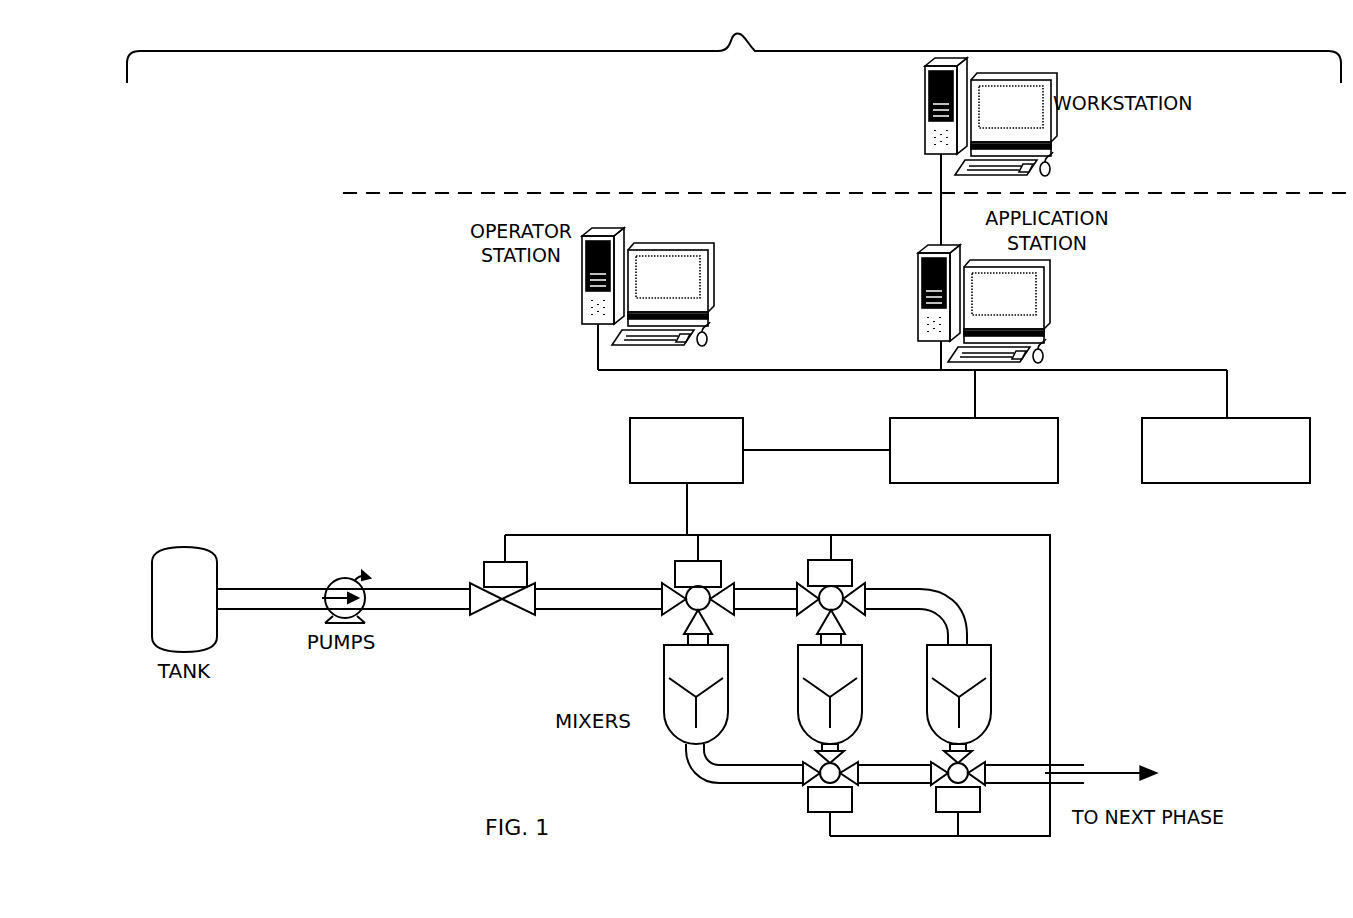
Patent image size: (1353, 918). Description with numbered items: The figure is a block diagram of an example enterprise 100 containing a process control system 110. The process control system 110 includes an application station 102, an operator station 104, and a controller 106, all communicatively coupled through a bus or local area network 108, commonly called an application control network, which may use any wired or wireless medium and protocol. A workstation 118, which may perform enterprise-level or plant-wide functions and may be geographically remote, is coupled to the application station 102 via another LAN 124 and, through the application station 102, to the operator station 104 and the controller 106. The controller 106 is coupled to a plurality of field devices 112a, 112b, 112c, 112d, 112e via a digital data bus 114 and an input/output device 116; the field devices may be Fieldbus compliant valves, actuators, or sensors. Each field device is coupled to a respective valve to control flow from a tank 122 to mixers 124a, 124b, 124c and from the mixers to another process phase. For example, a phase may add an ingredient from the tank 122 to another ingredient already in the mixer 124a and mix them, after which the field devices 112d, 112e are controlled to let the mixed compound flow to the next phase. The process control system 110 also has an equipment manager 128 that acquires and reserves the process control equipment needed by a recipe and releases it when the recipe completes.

The enterprise 100 is at (740, 33).
The application station 102 is at (918, 292).
The operator station 104 is at (620, 232).
The controller 106 is at (1031, 418).
The bus or local area network 108 is at (757, 370).
The process control system 110 is at (394, 354).
The field device 112a is at (484, 575).
The field device 112b is at (675, 574).
The field device 112c is at (852, 574).
The field device 112d is at (815, 812).
The field device 112e is at (940, 812).
The digital data bus 114 is at (668, 511).
The input/output (I/O) device 116 is at (743, 433).
The workstation 118 is at (925, 100).
The tank 122 is at (184, 599).
The LAN 124 is at (940, 172).
The mixer 124a is at (728, 695).
The mixer 124b is at (862, 695).
The mixer 124c is at (991, 695).
The equipment manager 128 is at (1281, 418).